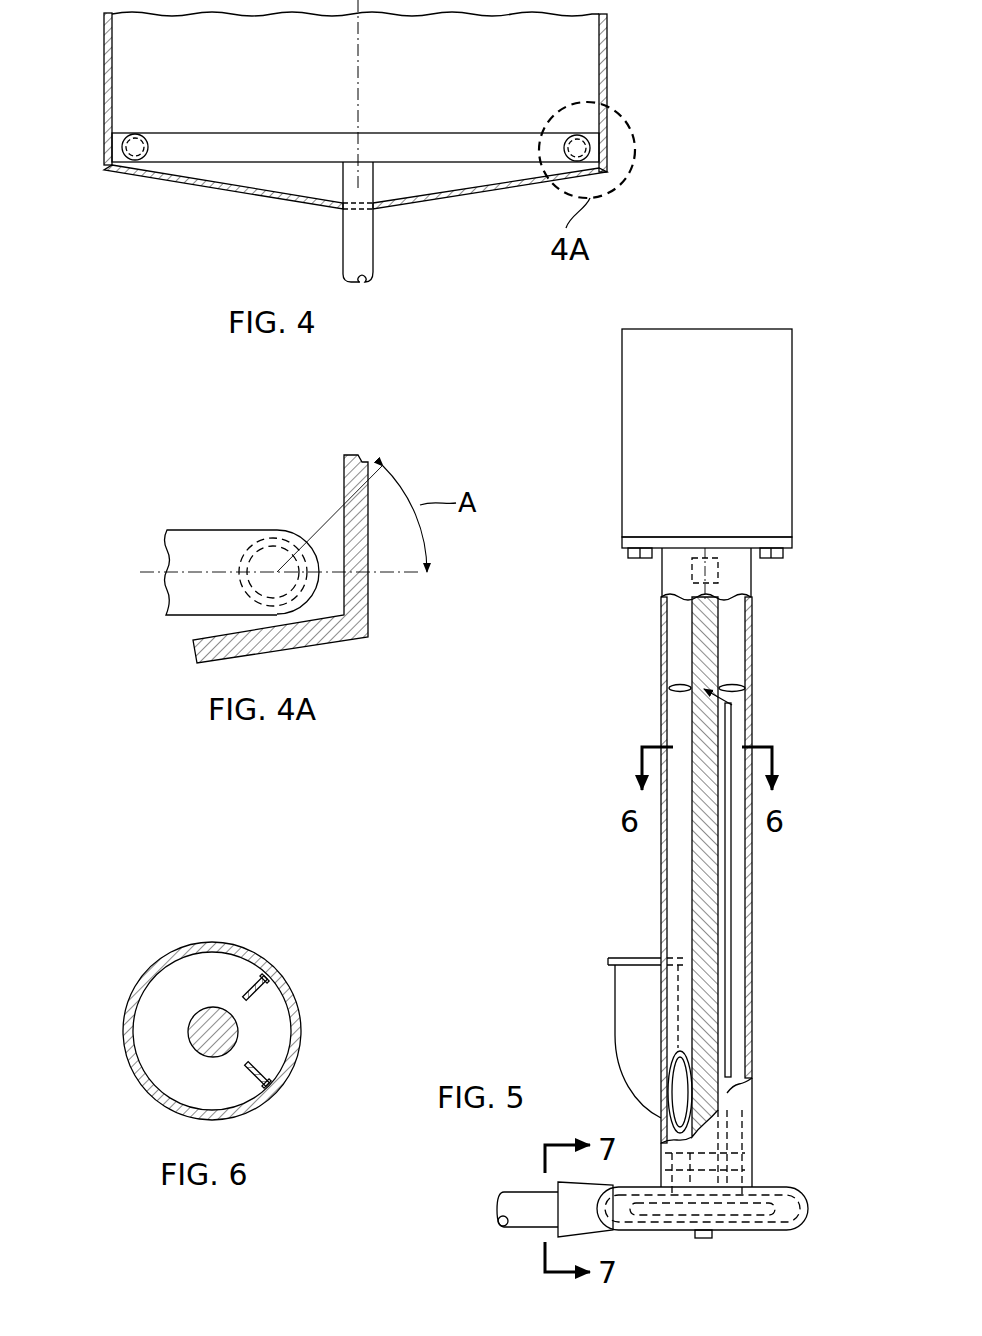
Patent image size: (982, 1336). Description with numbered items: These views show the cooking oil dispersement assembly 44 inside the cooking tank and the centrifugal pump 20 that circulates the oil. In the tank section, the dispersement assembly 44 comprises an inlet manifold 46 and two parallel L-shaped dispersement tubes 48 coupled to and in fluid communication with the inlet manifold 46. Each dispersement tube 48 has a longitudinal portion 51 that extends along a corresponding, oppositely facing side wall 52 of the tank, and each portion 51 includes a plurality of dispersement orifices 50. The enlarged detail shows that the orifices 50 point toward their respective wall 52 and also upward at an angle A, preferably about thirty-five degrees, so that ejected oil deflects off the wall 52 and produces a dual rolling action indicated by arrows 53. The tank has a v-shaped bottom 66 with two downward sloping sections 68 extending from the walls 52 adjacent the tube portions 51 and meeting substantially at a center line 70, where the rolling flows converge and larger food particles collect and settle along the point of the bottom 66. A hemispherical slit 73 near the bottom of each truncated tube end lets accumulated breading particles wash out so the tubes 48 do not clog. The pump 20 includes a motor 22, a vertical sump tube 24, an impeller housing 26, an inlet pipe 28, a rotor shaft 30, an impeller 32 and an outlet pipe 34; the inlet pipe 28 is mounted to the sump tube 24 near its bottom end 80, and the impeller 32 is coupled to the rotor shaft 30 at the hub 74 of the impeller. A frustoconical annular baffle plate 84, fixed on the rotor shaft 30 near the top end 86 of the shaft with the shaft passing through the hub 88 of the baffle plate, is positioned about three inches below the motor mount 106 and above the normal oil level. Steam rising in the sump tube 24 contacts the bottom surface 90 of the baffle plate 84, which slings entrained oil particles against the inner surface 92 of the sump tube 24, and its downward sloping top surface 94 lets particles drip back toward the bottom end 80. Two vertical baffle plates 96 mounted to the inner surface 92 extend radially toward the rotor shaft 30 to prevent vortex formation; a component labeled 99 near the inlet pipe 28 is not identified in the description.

In FIG. 5, the pump 20 is at (593, 828).
In FIG. 5, the motor 22 is at (742, 438).
In FIG. 5, the vertical sump tube 24 is at (752, 613).
In FIG. 6, the vertical sump tube 24 is at (240, 947).
In FIG. 5, the impeller housing 26 is at (806, 1226).
In FIG. 5, the inlet pipe 28 is at (628, 998).
In FIG. 5, the rotor shaft 30 is at (700, 865).
In FIG. 6, the rotor shaft 30 is at (232, 1033).
In FIG. 5, the impeller 32 is at (740, 1215).
In FIG. 5, the outlet pipe 34 is at (535, 1222).
In FIG. 4, the cooking oil dispersement assembly 44 is at (390, 127).
In FIG. 4, the inlet manifold 46 is at (353, 233).
In FIG. 4, the dispersement tubes 48 is at (105, 172).
In FIG. 4A, the dispersement tubes 48 is at (308, 590).
In FIG. 4, the dispersement orifices 50 is at (108, 144).
In FIG. 4A, the dispersement orifices 50 is at (297, 530).
In FIG. 4, the longitudinal portion 51 is at (148, 139).
In FIG. 4, the side wall 52 is at (104, 62).
In FIG. 4A, the side wall 52 is at (356, 457).
In FIG. 4, the arrows 53 is at (126, 82).
In FIG. 4A, the arrows 53 is at (312, 438).
In FIG. 4, the v-shaped bottom 66 is at (426, 203).
In FIG. 4, the downward sloping sections 68 is at (204, 180).
In FIG. 4, the center line 70 is at (352, 122).
In FIG. 4A, the slit 73 is at (235, 565).
In FIG. 5, the hub of the impeller 74 is at (702, 1168).
In FIG. 5, the bottom end of the sump tube 80 is at (750, 1165).
In FIG. 5, the annular baffle plate 84 is at (745, 681).
In FIG. 5, the top end of the shaft 86 is at (742, 575).
In FIG. 5, the hub of the baffle plate 88 is at (732, 705).
In FIG. 5, the bottom surface of the baffle plate 90 is at (672, 690).
In FIG. 5, the inner surface of the sump tube 92 is at (742, 648).
In FIG. 6, the inner surface of the sump tube 92 is at (175, 1100).
In FIG. 5, the top surface of the baffle plate 94 is at (672, 683).
In FIG. 5, the vertical baffle plates 96 is at (737, 918).
In FIG. 6, the vertical baffle plates 96 is at (268, 994).
In FIG. 5, the bearing sleeve 99 is at (675, 1092).
In FIG. 5, the motor mount 106 is at (625, 545).